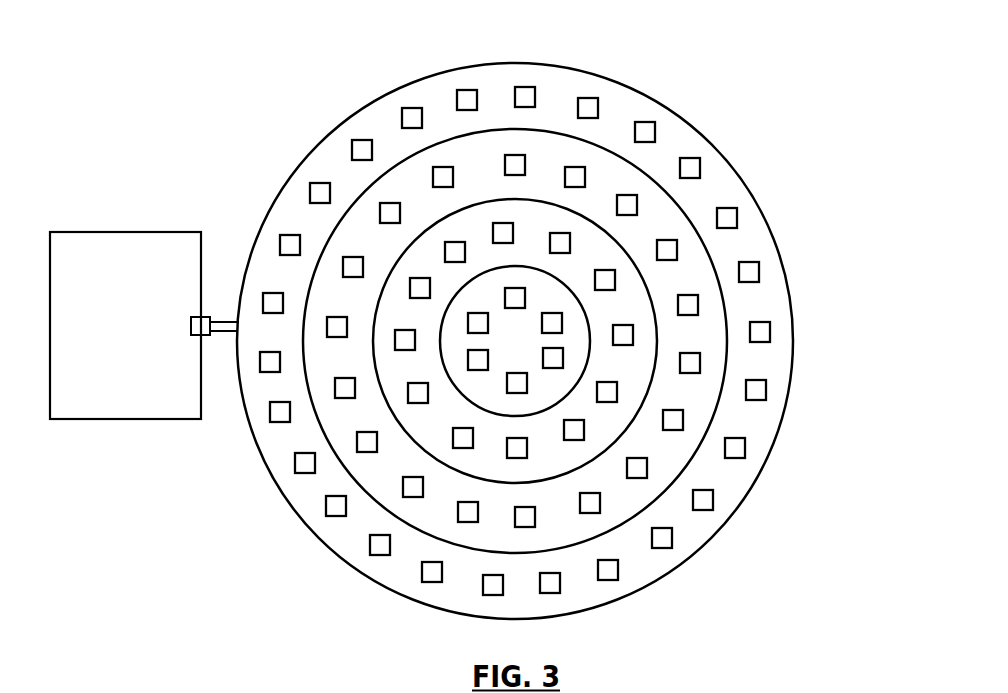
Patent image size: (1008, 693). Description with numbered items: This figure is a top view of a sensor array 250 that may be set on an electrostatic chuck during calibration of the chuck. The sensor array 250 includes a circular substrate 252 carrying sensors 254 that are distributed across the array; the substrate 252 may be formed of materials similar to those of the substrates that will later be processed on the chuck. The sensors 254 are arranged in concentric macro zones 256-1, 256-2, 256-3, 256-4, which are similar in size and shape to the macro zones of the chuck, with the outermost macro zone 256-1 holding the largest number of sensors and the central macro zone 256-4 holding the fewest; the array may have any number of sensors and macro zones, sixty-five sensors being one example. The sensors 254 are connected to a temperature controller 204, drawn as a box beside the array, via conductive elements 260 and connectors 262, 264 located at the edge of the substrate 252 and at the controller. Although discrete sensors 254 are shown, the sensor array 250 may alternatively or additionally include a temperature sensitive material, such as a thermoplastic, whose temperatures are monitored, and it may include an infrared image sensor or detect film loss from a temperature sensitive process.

The temperature controller 204 is at (124, 232).
The sensor array 250 is at (555, 330).
The substrate 252 is at (338, 125).
The sensors 254 is at (688, 158).
The macro zone 256-1 is at (538, 316).
The macro zone 256-2 is at (708, 335).
The macro zone 256-3 is at (595, 428).
The macro zone 256-4 is at (520, 400).
The conductive elements 260 is at (222, 321).
The connector 262 is at (207, 317).
The connector 264 is at (191, 317).